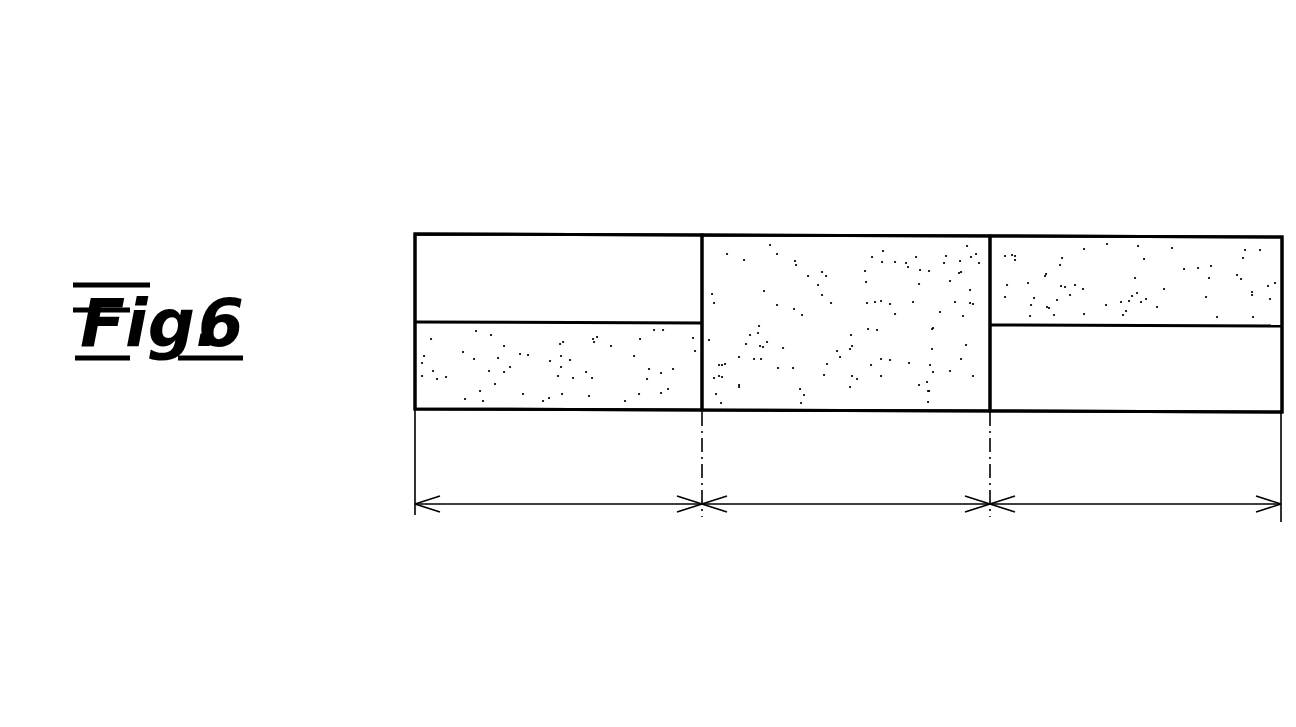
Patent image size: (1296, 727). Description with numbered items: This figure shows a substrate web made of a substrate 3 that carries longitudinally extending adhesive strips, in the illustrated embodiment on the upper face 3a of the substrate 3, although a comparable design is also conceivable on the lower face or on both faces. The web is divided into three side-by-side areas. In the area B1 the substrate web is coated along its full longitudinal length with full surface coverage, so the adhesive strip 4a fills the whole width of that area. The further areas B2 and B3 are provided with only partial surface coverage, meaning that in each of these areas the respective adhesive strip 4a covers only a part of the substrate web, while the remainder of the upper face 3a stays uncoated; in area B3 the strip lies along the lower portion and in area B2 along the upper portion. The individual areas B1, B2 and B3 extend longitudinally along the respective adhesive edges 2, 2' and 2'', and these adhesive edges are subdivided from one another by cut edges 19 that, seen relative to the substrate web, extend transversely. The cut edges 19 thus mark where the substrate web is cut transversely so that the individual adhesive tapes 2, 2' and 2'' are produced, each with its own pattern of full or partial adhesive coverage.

The substrate 3 is at (1190, 138).
The upper face of the substrate 3a is at (524, 253).
The adhesive tape 2' is at (558, 263).
The adhesive tape 2 is at (846, 267).
The adhesive tape 2'' is at (1116, 276).
The adhesive strip 4a is at (915, 275).
The cut edge 19 is at (702, 430).
The area with partial surface coverage B3 is at (605, 505).
The area with full surface coverage B1 is at (890, 505).
The area with partial surface coverage B2 is at (1175, 510).